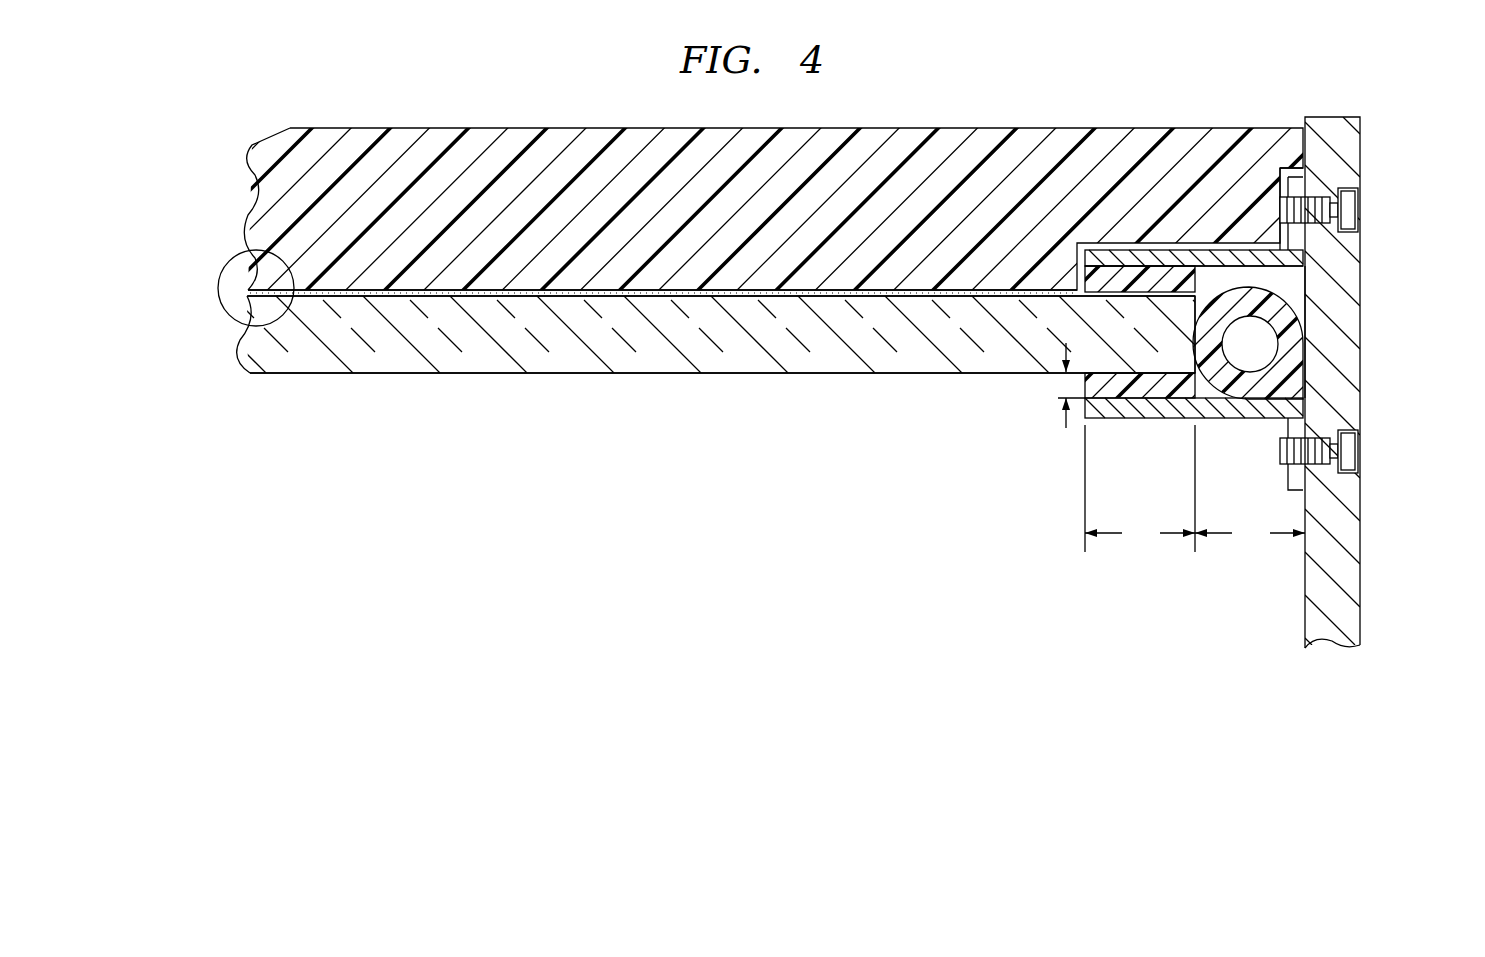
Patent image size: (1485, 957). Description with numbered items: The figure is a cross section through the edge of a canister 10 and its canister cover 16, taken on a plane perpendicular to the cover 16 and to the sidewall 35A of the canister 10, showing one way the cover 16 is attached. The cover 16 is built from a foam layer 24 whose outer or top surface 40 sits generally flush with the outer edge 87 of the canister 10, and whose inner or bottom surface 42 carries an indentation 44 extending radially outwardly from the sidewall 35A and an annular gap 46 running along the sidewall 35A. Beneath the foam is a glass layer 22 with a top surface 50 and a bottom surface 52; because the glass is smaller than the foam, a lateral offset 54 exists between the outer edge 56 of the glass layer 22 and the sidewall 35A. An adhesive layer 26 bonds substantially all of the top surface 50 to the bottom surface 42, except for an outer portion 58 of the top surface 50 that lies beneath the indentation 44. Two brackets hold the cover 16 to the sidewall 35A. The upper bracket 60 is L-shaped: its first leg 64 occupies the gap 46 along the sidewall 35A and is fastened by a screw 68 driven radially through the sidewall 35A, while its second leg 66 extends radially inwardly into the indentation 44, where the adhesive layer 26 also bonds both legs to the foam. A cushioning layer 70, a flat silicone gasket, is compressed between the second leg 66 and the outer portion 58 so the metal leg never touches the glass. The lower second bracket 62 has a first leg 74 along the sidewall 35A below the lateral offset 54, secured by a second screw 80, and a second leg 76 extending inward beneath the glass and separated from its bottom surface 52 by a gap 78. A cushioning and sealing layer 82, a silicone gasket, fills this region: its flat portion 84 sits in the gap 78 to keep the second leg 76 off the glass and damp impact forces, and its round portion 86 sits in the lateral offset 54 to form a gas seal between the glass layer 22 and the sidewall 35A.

The canister 10 is at (1417, 540).
The canister cover 16 is at (1103, 93).
The glass layer 22 is at (245, 361).
The foam layer 24 is at (252, 172).
The adhesive layer 26 is at (250, 291).
The sidewall 35A is at (1352, 622).
The top surface 40 is at (410, 128).
The bottom surface 42 is at (262, 325).
The indentation 44 is at (1195, 256).
The annular gap 46 is at (1285, 168).
The top surface 50 is at (235, 268).
The bottom surface 52 is at (545, 375).
The lateral offset 54 is at (1250, 533).
The outer edge 56 is at (1200, 327).
The outer portion 58 is at (1140, 488).
The bracket 60 is at (1305, 284).
The second bracket 62 is at (1245, 410).
The first leg 64 is at (1298, 190).
The second leg 66 is at (1255, 260).
The screw 68 is at (1350, 210).
The cushioning layer 70 is at (1120, 278).
The first leg 74 is at (1283, 432).
The second leg 76 is at (1215, 405).
The gap 78 is at (1060, 397).
The screw 80 is at (1350, 452).
The cushioning and sealing layer 82 is at (1290, 322).
The flat portion 84 is at (1130, 385).
The round portion 86 is at (1285, 378).
The outer edge 87 is at (1335, 117).